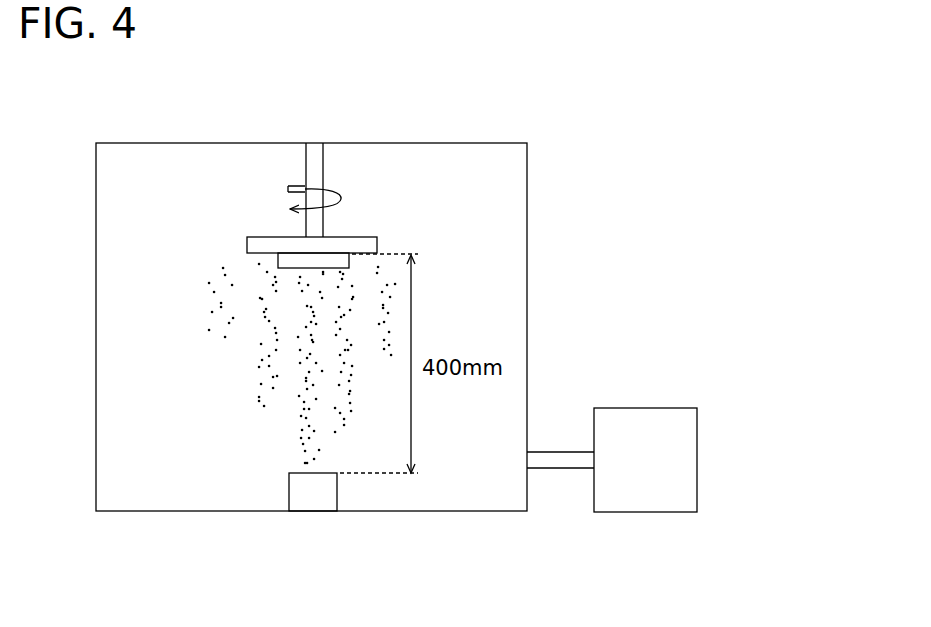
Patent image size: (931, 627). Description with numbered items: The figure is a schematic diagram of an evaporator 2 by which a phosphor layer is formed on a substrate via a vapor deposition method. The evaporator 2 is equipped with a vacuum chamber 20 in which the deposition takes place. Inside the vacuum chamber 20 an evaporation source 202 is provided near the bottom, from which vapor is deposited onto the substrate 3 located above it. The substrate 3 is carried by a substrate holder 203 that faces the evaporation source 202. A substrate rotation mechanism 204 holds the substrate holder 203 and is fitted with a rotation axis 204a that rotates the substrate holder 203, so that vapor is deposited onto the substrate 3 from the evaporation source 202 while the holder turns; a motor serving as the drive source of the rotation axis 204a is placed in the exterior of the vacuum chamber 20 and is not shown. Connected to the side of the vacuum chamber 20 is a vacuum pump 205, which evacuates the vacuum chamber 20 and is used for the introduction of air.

The evaporator 2 is at (407, 123).
The vacuum chamber 20 is at (528, 185).
The substrate rotation mechanism 204 is at (398, 183).
The rotation axis 204a is at (305, 161).
The substrate holder 203 is at (378, 245).
The substrate 3 is at (351, 262).
The evaporation source 202 is at (340, 490).
The vacuum pump 205 is at (698, 456).